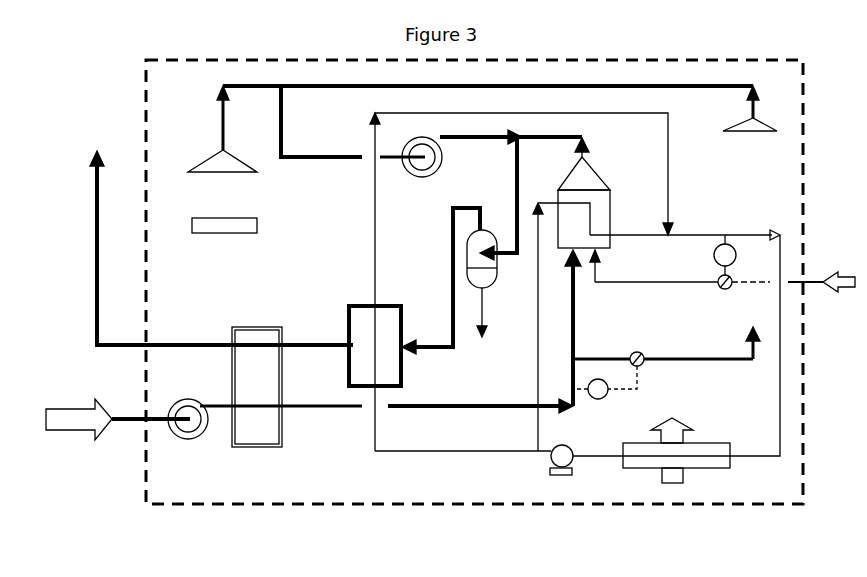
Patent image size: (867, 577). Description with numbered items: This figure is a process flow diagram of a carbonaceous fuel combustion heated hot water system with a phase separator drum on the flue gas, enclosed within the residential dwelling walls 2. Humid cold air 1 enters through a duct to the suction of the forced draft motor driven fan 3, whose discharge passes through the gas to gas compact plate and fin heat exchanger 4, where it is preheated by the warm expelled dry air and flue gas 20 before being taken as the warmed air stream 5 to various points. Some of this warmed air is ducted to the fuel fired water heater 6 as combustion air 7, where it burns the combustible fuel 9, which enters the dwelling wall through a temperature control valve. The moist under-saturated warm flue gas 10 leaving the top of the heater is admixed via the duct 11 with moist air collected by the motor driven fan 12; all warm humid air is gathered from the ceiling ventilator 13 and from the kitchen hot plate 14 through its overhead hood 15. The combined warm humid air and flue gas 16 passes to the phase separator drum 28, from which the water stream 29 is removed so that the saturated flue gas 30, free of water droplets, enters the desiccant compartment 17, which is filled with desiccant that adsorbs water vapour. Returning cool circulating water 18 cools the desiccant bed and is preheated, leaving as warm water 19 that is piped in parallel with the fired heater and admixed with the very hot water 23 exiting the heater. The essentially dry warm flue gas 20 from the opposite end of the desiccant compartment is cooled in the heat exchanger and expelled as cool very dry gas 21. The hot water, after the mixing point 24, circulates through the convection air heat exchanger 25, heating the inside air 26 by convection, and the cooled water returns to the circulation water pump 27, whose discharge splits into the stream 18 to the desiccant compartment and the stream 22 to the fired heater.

The humid cold air 1 is at (118, 426).
The residential dwelling walls 2 is at (262, 507).
The forced draft motor driven fan 3 is at (188, 439).
The gas to gas compact plate and fin heat exchanger 4 is at (281, 387).
The warmed air stream 5 is at (480, 414).
The fuel fired water heater 6 is at (594, 180).
The combustion air 7 is at (561, 327).
The combustible fuel 9 is at (722, 271).
The warm flue gas 10 is at (514, 137).
The duct 11 is at (381, 127).
The motor driven fan 12 is at (422, 169).
The ceiling ventilator 13 is at (750, 122).
The kitchen hot plate 14 is at (224, 237).
The overhead hood 15 is at (470, 142).
The combined warm humid air and flue gas 16 is at (498, 198).
The desiccant compartment 17 is at (365, 328).
The returning cool circulating water 18 is at (463, 437).
The warm water 19 is at (521, 282).
The warm dry flue gas 20 is at (225, 333).
The cool very dry gas 21 is at (82, 249).
The water stream to fired heater 22 is at (542, 328).
The very hot water 23 is at (629, 224).
The temperature controlled line 24 is at (676, 334).
The convection air heat exchanger 25 is at (700, 450).
The inside air 26 is at (672, 417).
The circulation water pump 27 is at (560, 473).
The phase separator drum 28 is at (497, 262).
The water stream 29 is at (483, 325).
The saturated flue gas 30 is at (441, 281).